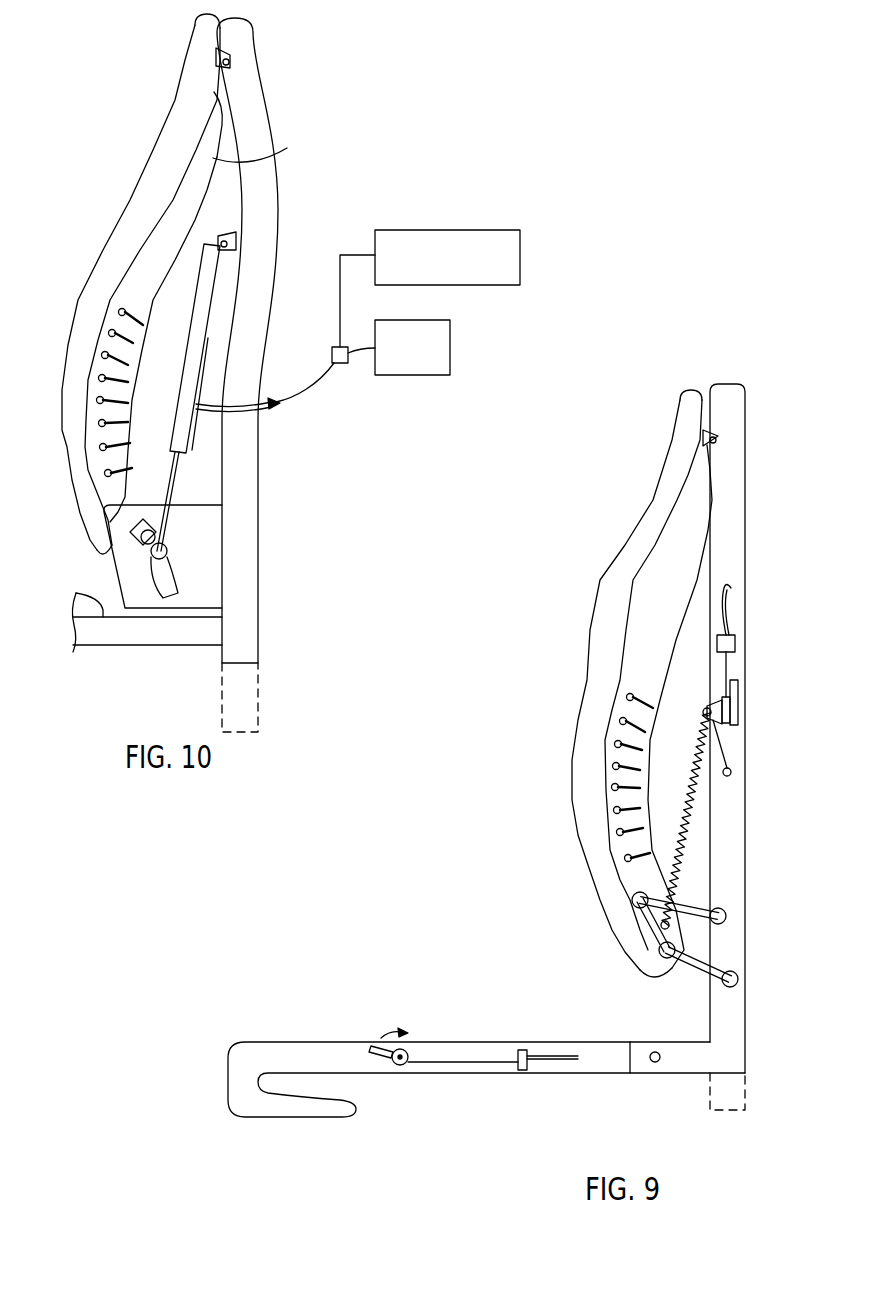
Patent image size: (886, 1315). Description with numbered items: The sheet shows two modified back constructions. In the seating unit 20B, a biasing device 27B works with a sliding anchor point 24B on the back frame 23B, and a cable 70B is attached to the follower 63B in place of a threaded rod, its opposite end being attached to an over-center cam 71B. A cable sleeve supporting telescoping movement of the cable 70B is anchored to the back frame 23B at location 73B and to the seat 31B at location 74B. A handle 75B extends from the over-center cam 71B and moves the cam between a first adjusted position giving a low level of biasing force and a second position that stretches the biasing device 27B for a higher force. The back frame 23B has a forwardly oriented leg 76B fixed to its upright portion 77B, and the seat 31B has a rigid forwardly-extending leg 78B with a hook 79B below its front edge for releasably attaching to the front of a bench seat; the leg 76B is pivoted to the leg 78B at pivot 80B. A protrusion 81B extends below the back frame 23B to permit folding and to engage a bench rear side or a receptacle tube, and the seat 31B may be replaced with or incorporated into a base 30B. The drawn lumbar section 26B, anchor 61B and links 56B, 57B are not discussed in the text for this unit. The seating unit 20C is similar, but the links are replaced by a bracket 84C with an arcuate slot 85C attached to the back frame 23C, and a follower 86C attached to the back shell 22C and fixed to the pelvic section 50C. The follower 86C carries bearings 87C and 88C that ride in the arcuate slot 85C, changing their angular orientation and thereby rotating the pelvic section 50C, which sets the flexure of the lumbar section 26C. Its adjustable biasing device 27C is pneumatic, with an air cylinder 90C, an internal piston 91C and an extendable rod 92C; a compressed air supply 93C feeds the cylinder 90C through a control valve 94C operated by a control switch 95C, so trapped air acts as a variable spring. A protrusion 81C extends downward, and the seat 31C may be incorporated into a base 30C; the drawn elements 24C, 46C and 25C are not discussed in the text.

In FIG. 10, the seating unit 20C is at (114, 114).
In FIG. 10, the back frame 23C is at (268, 82).
In FIG. 10, the pivot bracket 24C is at (232, 57).
In FIG. 10, the upper pad support 46C is at (225, 118).
In FIG. 10, the back shell 22C is at (212, 328).
In FIG. 10, the adjustable biasing device 27C is at (184, 274).
In FIG. 10, the lumbar section 26C is at (122, 353).
In FIG. 10, the air cylinder 90C is at (217, 325).
In FIG. 10, the internal piston 91C is at (190, 338).
In FIG. 10, the extendable rod 92C is at (210, 343).
In FIG. 10, the pelvic section 50C is at (125, 497).
In FIG. 10, the flexible back shell 25C is at (92, 577).
In FIG. 10, the arcuate slot 85C is at (170, 578).
In FIG. 10, the follower 86C is at (177, 555).
In FIG. 10, the bearing 87C is at (140, 540).
In FIG. 10, the bearing 88C is at (167, 553).
In FIG. 10, the bracket 84C is at (133, 600).
In FIG. 10, the seat 31C is at (90, 637).
In FIG. 10, the base 30C is at (108, 714).
In FIG. 10, the protrusion 81C is at (258, 694).
In FIG. 10, the compressed air supply 93C is at (452, 337).
In FIG. 10, the control valve 94C is at (338, 368).
In FIG. 10, the control switch 95C is at (522, 252).
In FIG. 9, the seating unit 20B is at (445, 811).
In FIG. 9, the back frame 23B is at (738, 467).
In FIG. 9, the sliding anchor point 24B is at (722, 437).
In FIG. 9, the lumbar support fingers 26B is at (643, 740).
In FIG. 9, the biasing device 27B is at (722, 812).
In FIG. 9, the screw pivot 61B is at (705, 710).
In FIG. 9, the follower 63B is at (717, 722).
In FIG. 9, the cable 70B is at (727, 672).
In FIG. 9, the anchor location 73B is at (737, 647).
In FIG. 9, the upper link 56B is at (688, 903).
In FIG. 9, the lower link 57B is at (692, 973).
In FIG. 9, the upright portion 77B is at (738, 930).
In FIG. 9, the protrusion 81B is at (745, 1102).
In FIG. 9, the base 30B is at (205, 1086).
In FIG. 9, the seat 31B is at (320, 1040).
In FIG. 9, the hook 79B is at (298, 1120).
In FIG. 9, the forwardly oriented leg 76B is at (677, 1065).
In FIG. 9, the forwardly-extending leg 78B is at (597, 1063).
In FIG. 9, the pivot 80B is at (652, 1053).
In FIG. 9, the over-center cam 71B is at (392, 1067).
In FIG. 9, the handle 75B is at (377, 1055).
In FIG. 9, the anchor location 74B is at (522, 1052).